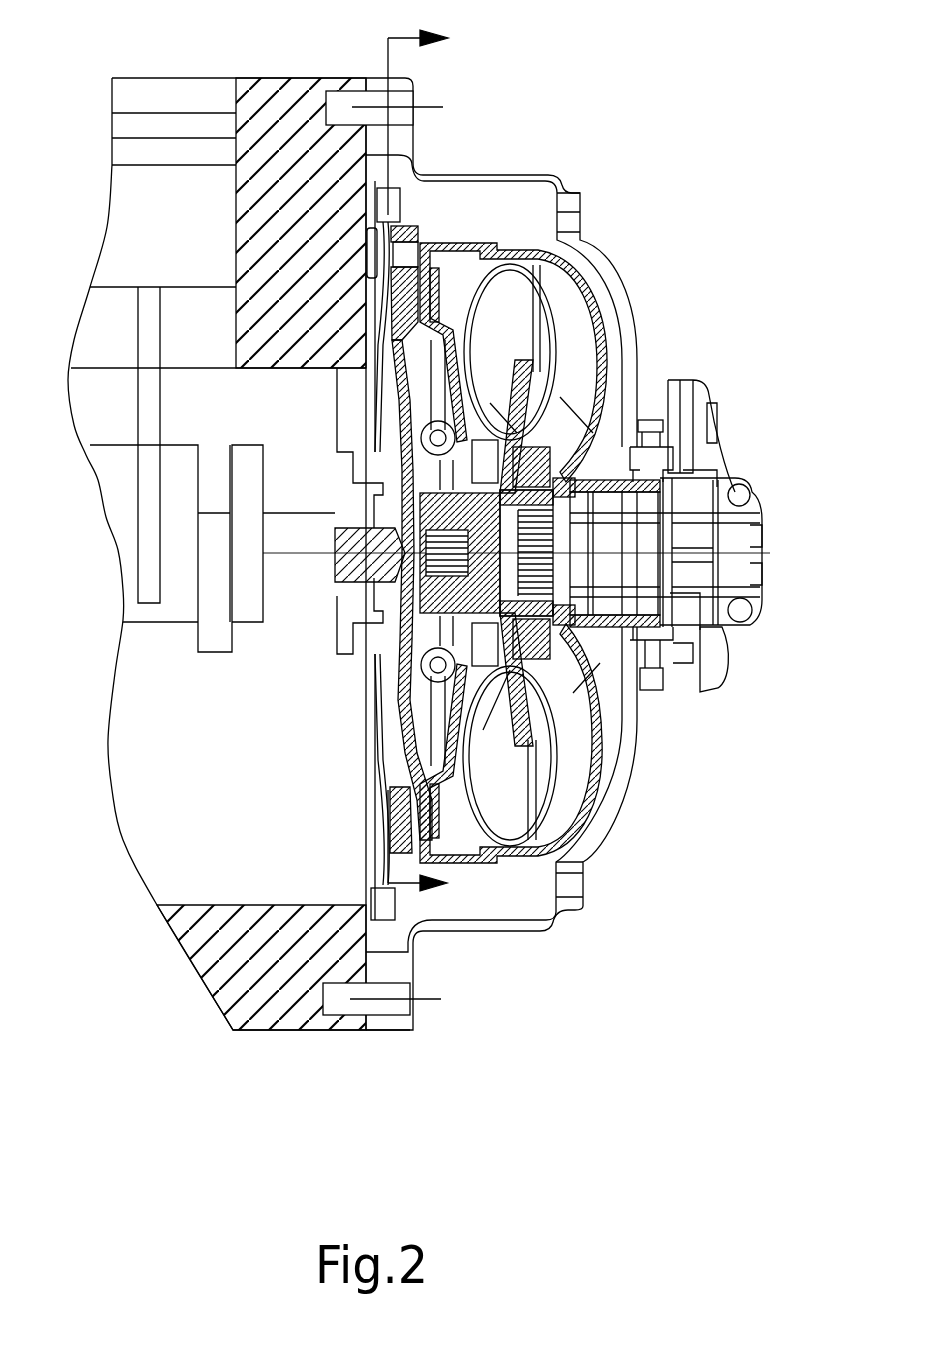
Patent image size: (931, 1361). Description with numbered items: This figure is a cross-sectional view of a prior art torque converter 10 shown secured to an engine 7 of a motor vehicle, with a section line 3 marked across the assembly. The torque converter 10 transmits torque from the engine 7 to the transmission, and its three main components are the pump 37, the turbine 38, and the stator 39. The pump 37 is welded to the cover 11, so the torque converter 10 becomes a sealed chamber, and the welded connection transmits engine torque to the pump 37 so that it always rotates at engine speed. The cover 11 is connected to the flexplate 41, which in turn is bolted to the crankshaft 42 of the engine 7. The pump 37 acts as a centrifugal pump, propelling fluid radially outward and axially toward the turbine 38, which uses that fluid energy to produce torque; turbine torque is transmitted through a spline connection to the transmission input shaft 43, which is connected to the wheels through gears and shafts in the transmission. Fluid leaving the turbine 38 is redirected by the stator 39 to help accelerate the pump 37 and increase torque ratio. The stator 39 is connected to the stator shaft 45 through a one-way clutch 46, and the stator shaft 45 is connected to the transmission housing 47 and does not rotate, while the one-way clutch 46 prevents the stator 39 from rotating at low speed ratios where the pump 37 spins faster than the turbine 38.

The section line 3- 3 is at (425, 460).
The engine 7 is at (378, 938).
The torque converter 10 is at (602, 289).
The cover 11 is at (382, 400).
The pump 37 is at (602, 813).
The turbine 38 is at (458, 818).
The stator 39 is at (450, 743).
The flexplate 41 is at (386, 699).
The crankshaft 42 is at (315, 616).
The transmission input shaft 43 is at (693, 572).
The stator shaft 45 is at (687, 495).
The one-way clutch 46 is at (579, 668).
The transmission housing 47 is at (697, 393).